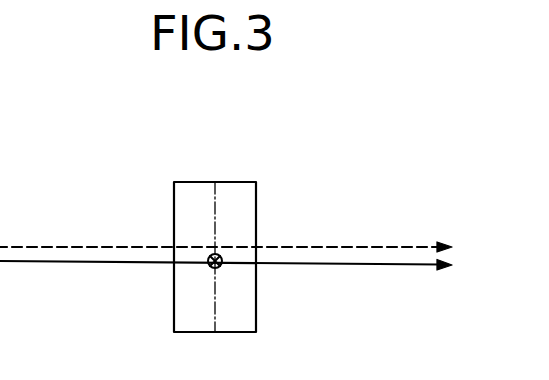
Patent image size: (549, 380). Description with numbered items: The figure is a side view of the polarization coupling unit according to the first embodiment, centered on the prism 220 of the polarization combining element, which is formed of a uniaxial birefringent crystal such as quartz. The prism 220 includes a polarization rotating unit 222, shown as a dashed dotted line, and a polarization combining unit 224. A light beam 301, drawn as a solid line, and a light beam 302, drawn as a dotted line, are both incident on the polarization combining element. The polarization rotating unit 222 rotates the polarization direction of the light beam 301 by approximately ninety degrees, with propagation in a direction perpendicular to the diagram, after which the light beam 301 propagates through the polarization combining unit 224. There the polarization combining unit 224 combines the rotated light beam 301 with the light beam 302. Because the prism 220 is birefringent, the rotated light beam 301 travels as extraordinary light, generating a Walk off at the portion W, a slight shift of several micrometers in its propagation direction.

The prism 220 is at (199, 182).
The polarization rotating unit 222 is at (222, 264).
The polarization combining unit 224 is at (232, 234).
The Walk off portion W is at (245, 257).
The light beam 301 is at (69, 262).
The light beam 302 is at (68, 247).